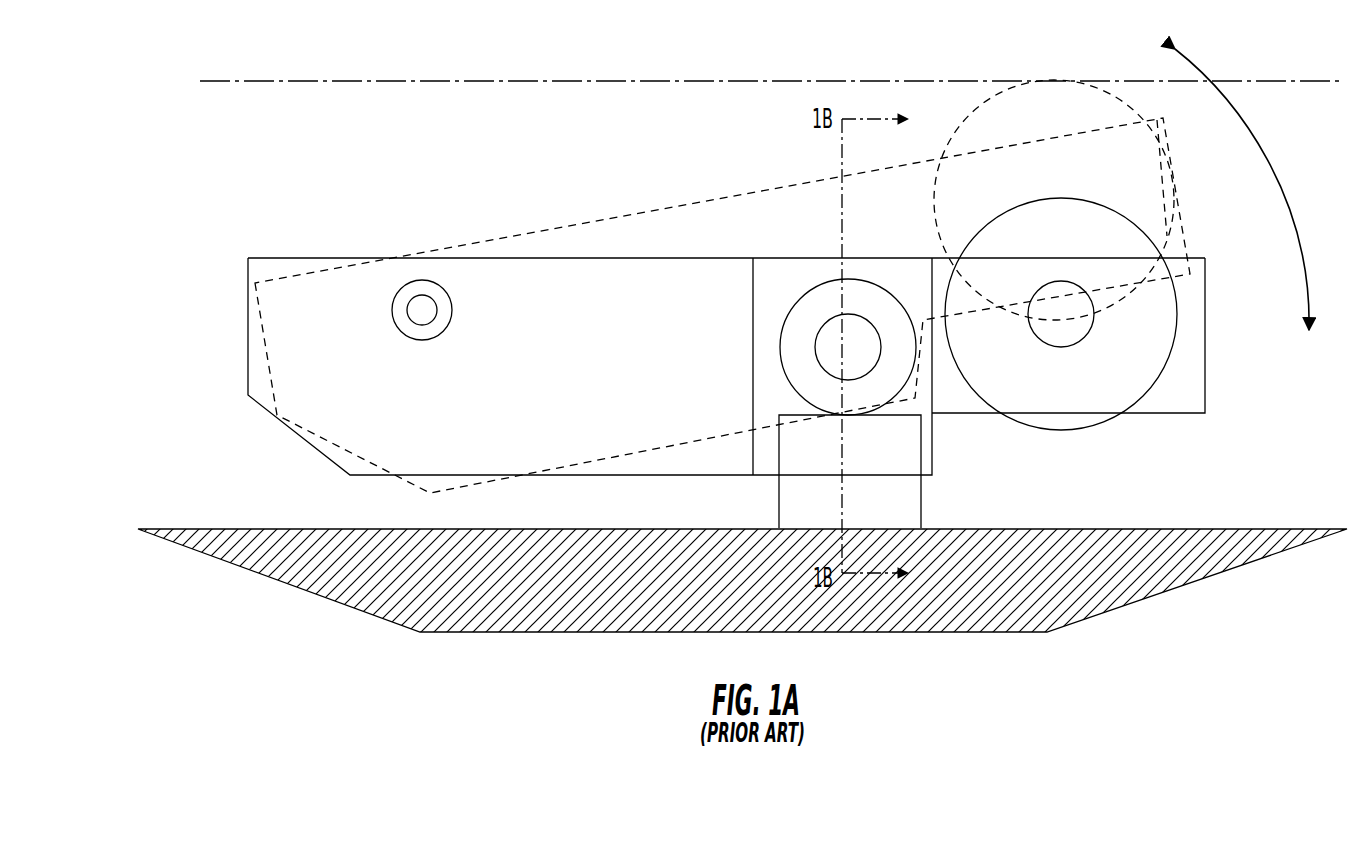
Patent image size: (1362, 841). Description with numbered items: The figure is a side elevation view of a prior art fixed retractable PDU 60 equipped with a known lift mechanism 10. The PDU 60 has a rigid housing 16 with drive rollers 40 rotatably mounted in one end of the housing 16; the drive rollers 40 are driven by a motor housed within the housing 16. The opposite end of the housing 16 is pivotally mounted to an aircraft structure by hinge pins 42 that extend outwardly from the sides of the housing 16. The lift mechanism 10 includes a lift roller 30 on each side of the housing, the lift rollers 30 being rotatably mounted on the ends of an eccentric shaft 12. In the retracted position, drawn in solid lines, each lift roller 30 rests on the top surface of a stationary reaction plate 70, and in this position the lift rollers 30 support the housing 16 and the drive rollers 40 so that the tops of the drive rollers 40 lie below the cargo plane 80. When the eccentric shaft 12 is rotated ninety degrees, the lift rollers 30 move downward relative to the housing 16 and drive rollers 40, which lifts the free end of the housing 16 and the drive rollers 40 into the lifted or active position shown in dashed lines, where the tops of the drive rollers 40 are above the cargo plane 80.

The lift mechanism 10 is at (696, 363).
The eccentric shaft 12 is at (833, 313).
The rigid housing 16 is at (248, 335).
The lift roller 30 is at (797, 297).
The drive roller 40 is at (1110, 418).
The hinge pin 42 is at (411, 298).
The fixed retractable PDU 60 is at (262, 187).
The stationary reaction plate 70 is at (921, 487).
The cargo plane 80 is at (514, 81).